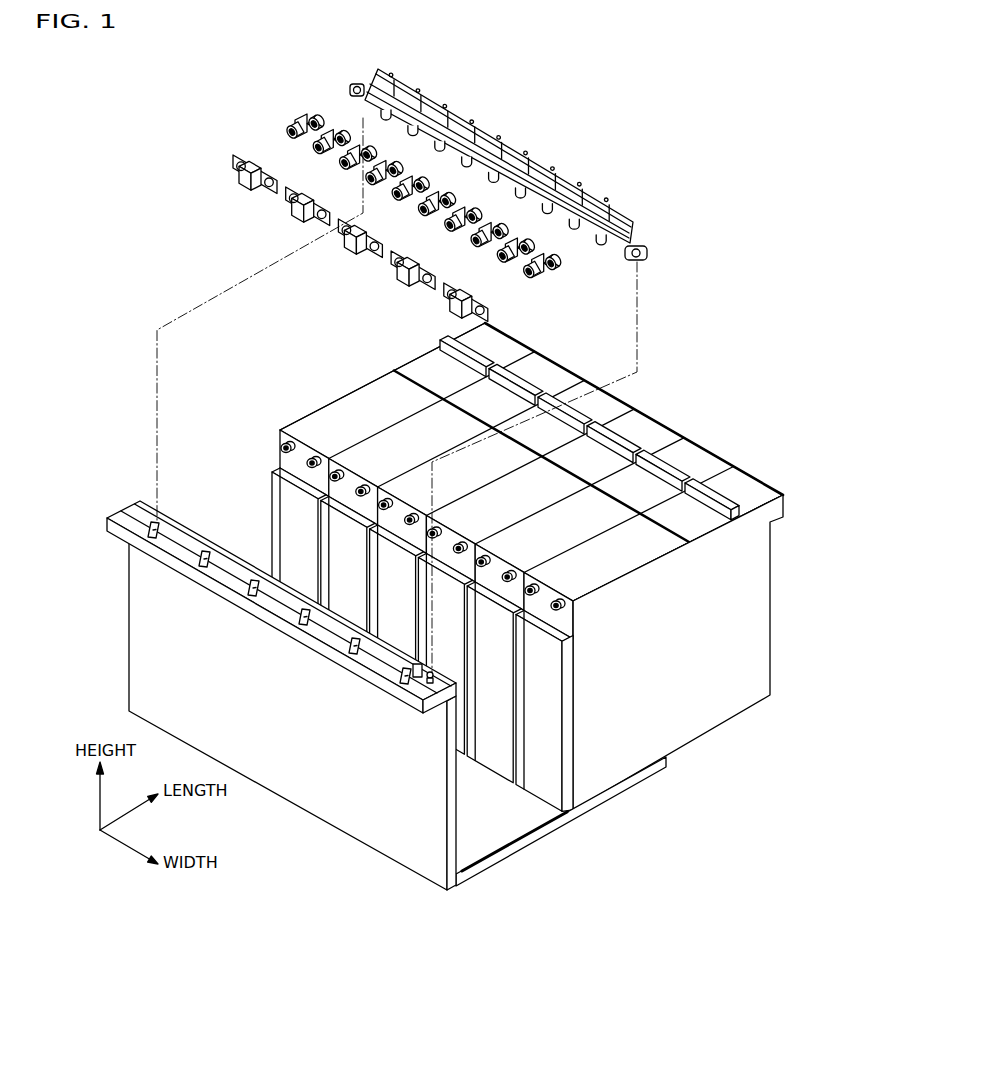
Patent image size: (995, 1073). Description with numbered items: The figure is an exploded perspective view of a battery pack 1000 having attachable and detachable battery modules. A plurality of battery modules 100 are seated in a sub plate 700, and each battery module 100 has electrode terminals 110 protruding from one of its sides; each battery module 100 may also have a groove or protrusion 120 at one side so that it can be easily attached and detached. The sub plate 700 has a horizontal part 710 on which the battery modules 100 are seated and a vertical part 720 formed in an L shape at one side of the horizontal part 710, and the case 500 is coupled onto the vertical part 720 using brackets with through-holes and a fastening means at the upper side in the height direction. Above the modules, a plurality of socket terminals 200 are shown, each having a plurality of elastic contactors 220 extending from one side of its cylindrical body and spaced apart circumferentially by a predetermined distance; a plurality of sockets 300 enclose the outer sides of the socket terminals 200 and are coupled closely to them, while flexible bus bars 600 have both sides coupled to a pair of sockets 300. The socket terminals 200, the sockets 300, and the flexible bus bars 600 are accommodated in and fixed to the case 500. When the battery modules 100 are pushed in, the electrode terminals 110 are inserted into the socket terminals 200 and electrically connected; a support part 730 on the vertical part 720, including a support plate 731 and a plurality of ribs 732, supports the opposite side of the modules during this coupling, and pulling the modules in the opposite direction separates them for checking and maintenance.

The battery pack 1000 is at (652, 141).
The battery module 100 is at (430, 401).
The electrode terminal 110 is at (282, 428).
The groove or protrusion 120 is at (722, 497).
The socket terminal 200 is at (310, 118).
The elastic contactor 220 is at (322, 113).
The socket 300 is at (288, 124).
The case 500 is at (458, 121).
The flexible bus bar 600 is at (238, 186).
The sub plate 700 is at (121, 581).
The horizontal part 710 is at (505, 828).
The vertical part 720 is at (145, 633).
The support part 730 is at (380, 880).
The support plate 731 is at (396, 662).
The rib 732 is at (352, 658).